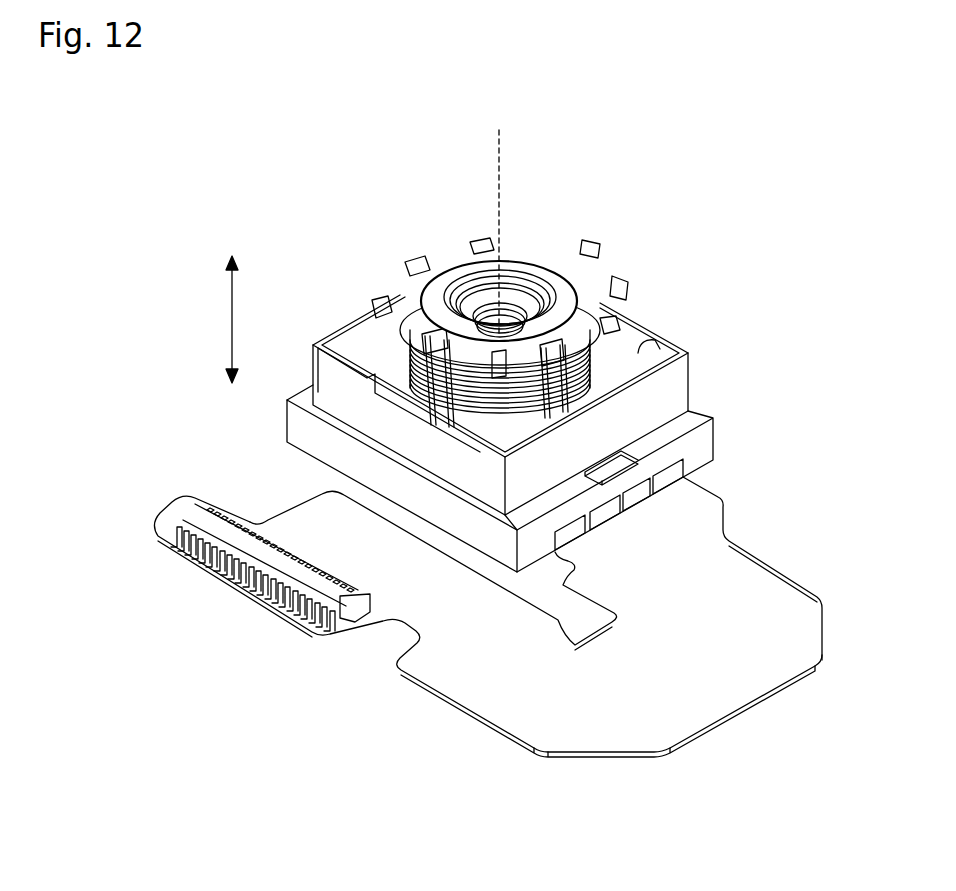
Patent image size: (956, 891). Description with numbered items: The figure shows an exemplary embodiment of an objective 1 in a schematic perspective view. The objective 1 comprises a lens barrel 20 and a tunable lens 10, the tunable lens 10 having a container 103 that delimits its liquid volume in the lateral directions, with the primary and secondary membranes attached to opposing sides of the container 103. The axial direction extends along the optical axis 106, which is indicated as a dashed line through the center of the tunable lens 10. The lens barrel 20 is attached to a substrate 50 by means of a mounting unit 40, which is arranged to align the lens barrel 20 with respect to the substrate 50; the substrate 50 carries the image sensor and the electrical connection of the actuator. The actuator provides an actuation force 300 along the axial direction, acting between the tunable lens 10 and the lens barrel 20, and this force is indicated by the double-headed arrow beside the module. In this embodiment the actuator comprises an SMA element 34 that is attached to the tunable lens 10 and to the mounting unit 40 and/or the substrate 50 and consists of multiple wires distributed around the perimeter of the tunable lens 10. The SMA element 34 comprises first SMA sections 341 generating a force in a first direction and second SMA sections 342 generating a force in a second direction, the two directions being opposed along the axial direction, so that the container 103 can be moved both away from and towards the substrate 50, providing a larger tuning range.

The objective 1 is at (750, 150).
The tunable lens 10 is at (558, 278).
The lens barrel 20 is at (451, 310).
The SMA element 34 is at (415, 310).
The first SMA sections 341 is at (418, 322).
The second SMA sections 342 is at (403, 377).
The mounting unit 40 is at (657, 387).
The substrate 50 is at (683, 452).
The container 103 is at (445, 265).
The optical axis 106 is at (498, 195).
The actuation force 300 is at (218, 318).